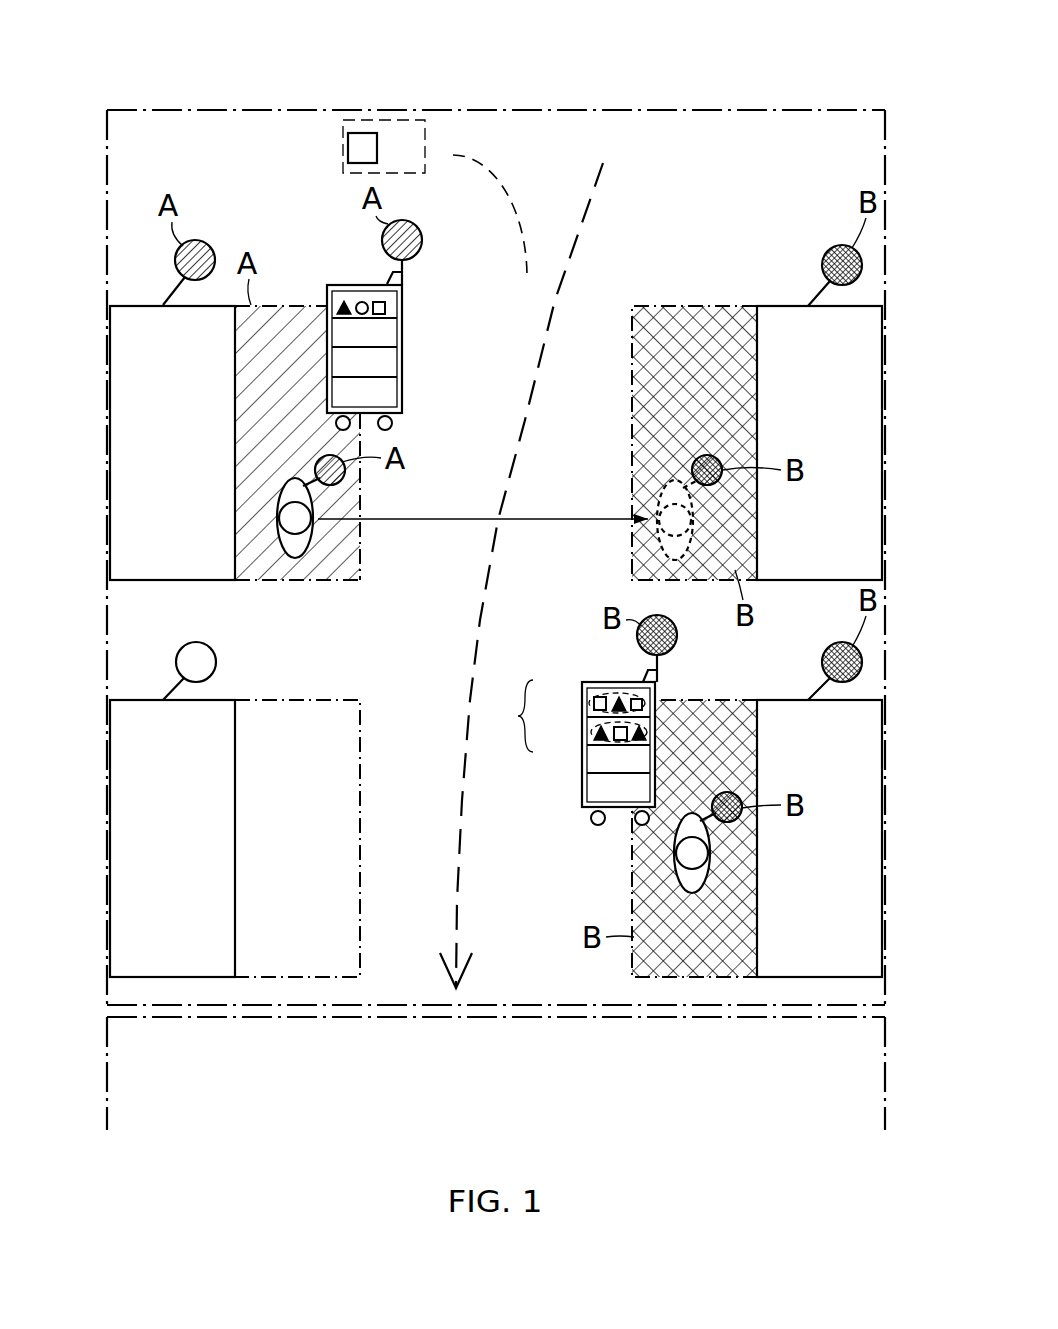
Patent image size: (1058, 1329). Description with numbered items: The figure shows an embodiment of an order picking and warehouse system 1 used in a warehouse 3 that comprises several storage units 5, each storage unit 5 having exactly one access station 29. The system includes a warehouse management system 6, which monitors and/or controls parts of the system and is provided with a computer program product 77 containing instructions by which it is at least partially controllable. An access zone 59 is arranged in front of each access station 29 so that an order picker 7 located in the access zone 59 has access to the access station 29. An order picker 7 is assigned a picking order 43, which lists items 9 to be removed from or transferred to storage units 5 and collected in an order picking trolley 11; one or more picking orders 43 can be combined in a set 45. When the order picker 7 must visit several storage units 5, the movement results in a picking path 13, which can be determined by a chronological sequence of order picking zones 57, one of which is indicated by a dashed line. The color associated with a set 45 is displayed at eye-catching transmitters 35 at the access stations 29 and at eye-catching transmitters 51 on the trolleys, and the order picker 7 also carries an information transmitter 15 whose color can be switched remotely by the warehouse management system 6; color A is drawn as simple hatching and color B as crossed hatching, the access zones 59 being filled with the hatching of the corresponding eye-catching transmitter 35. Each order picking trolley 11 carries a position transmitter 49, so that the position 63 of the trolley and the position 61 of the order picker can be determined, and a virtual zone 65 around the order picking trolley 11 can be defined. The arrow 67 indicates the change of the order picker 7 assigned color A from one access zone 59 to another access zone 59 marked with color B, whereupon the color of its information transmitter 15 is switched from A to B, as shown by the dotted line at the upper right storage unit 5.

The order picking and warehouse system 1 is at (833, 130).
The warehouse 3 is at (755, 68).
The storage unit 5 is at (122, 444).
The warehouse management system 6 is at (386, 163).
The order picker 7 is at (295, 558).
The item 9 is at (331, 290).
The order picking trolley 11 is at (402, 396).
The picking path 13 is at (578, 228).
The information transmitter 15 is at (341, 480).
The access station 29 is at (234, 447).
The eye-catching transmitter 35 is at (204, 244).
The picking order 43 is at (598, 692).
The set 45 is at (508, 716).
The position transmitter 49 is at (402, 273).
The eye-catching transmitter 51 is at (414, 224).
The order picking zone 57 is at (660, 108).
The access zone 59 is at (283, 305).
The position of an order picker 61 is at (318, 545).
The position of an order picking trolley 63 is at (517, 504).
The virtual zone 65 is at (508, 198).
The arrow 67 is at (460, 522).
The computer program product 77 is at (348, 150).